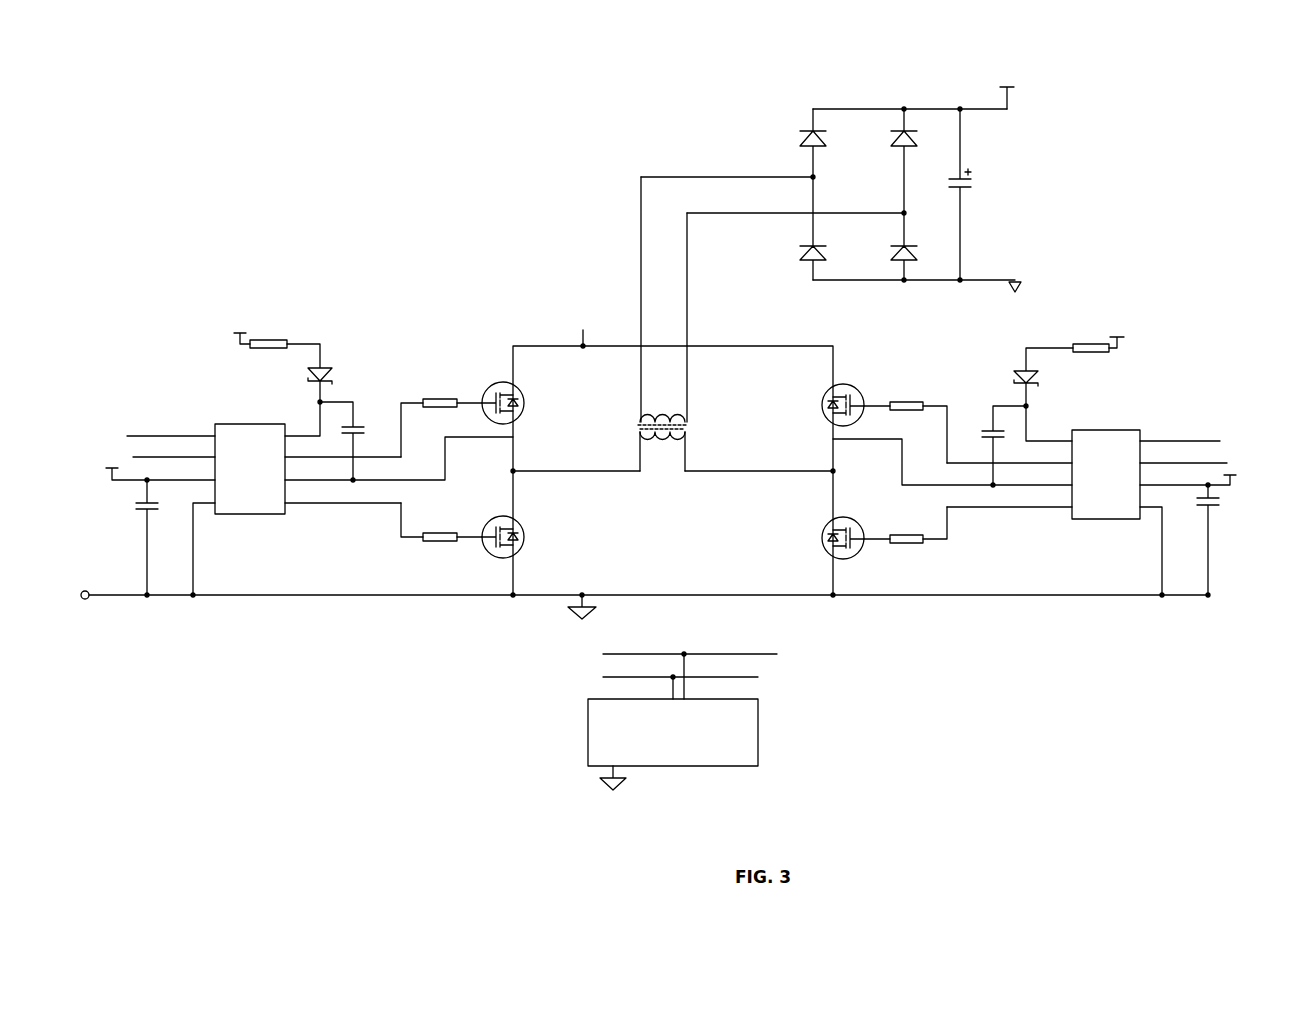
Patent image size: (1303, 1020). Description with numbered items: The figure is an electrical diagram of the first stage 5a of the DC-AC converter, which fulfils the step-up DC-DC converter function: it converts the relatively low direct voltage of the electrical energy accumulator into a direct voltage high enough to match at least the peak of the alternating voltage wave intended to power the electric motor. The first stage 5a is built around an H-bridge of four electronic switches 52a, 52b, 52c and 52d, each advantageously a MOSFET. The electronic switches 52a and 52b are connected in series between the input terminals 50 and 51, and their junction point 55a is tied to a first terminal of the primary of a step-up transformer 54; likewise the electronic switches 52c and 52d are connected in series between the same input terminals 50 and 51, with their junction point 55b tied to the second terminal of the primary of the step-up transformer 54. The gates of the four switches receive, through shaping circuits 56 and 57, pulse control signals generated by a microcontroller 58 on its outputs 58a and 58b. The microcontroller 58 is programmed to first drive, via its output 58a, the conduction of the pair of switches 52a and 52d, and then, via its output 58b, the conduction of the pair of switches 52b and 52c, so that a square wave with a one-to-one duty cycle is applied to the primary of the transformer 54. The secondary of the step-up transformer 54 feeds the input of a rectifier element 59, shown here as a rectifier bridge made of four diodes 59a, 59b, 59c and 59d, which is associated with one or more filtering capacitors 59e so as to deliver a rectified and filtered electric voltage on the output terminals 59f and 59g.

The first stage 5a is at (499, 265).
The input terminal 50 is at (583, 322).
The input terminal 51 is at (81, 599).
The electronic switch 52a is at (492, 386).
The electronic switch 52b is at (521, 537).
The electronic switch 52c is at (856, 389).
The electronic switch 52d is at (821, 536).
The step-up transformer 54 is at (632, 423).
The junction point 55a is at (515, 470).
The junction point 55b is at (830, 470).
The shaping circuit 56 is at (250, 494).
The shaping circuit 57 is at (1112, 440).
The microcontroller 58 is at (610, 742).
The output 58a is at (127, 436).
The output 58b is at (133, 457).
The rectifier element 59 is at (877, 178).
The diode 59a is at (801, 137).
The diode 59b is at (800, 253).
The diode 59c is at (898, 146).
The diode 59d is at (891, 255).
The filtering capacitor 59e is at (971, 184).
The output terminal 59f is at (1008, 96).
The output terminal 59g is at (1020, 283).